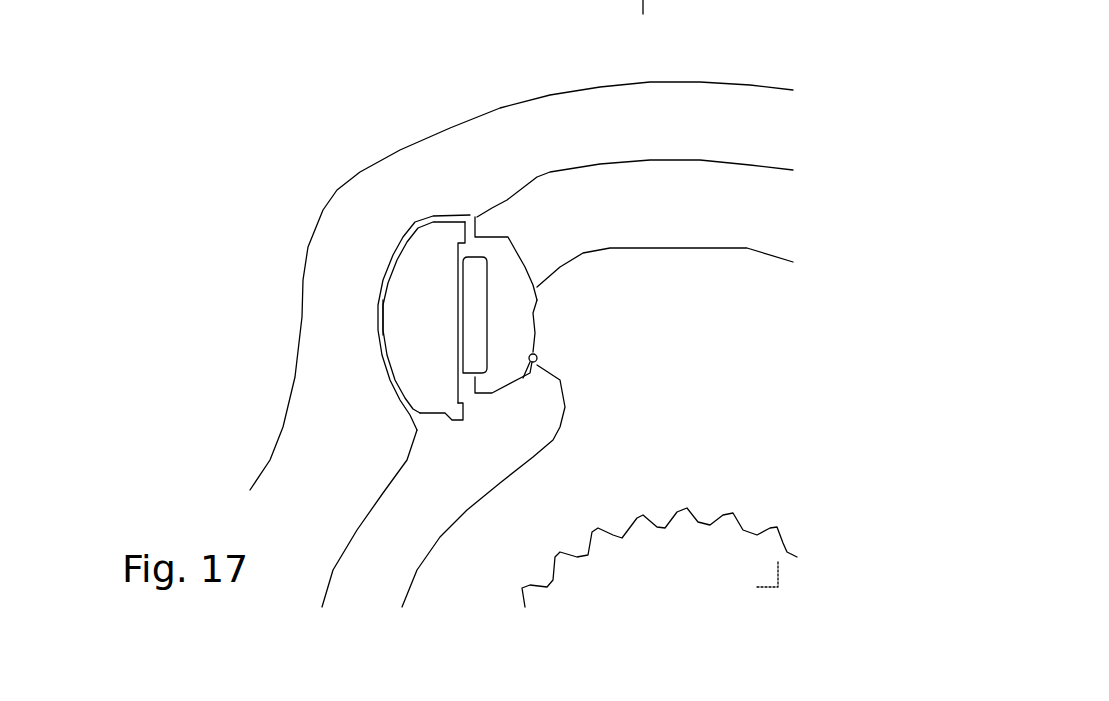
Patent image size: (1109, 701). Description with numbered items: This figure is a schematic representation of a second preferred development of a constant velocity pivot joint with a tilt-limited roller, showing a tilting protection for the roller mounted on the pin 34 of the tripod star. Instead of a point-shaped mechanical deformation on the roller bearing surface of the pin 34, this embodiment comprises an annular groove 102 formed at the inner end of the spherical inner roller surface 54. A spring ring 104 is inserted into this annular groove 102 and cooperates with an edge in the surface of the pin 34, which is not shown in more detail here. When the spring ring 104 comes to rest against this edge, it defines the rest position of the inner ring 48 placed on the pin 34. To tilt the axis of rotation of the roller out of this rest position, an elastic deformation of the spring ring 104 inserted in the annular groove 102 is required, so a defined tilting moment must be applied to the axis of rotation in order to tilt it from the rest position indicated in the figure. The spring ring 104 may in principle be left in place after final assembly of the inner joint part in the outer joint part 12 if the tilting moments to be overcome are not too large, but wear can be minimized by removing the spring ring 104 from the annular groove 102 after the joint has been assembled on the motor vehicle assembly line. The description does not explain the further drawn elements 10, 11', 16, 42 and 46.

The seat 10 is at (272, 505).
The rail 11' is at (425, 221).
The body 12 is at (507, 286).
The recess 16 is at (229, 314).
The flange 34 is at (704, 210).
The ring 42 is at (300, 237).
The slot 46 is at (479, 210).
The guide 48 is at (537, 211).
The edge 54 is at (616, 324).
The pivot 102 is at (297, 376).
The lever 104 is at (345, 443).